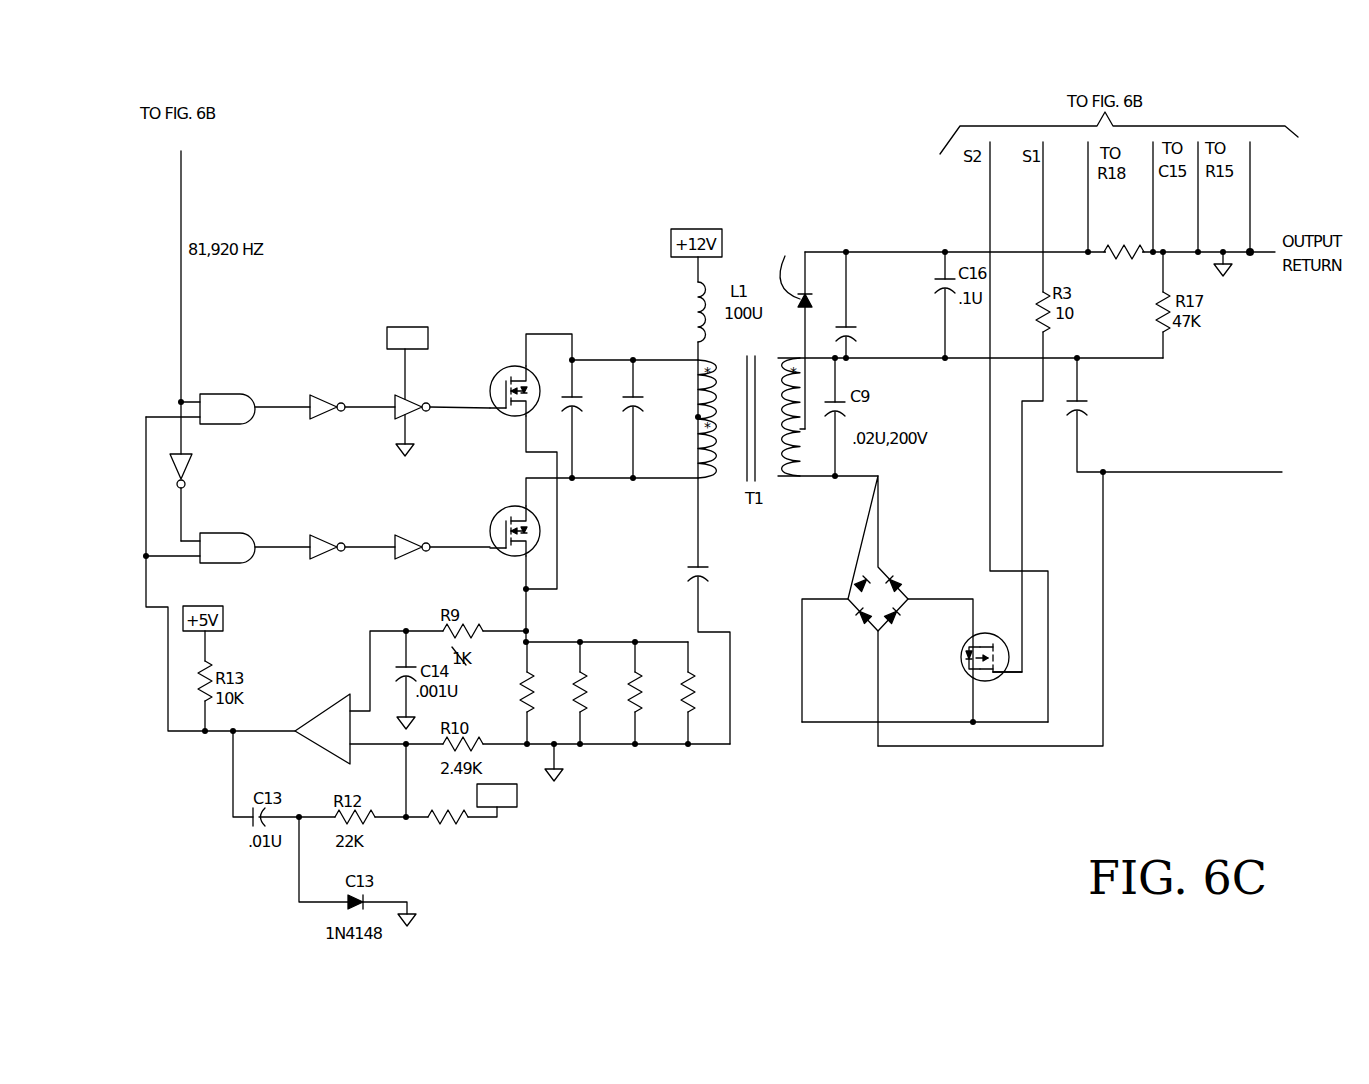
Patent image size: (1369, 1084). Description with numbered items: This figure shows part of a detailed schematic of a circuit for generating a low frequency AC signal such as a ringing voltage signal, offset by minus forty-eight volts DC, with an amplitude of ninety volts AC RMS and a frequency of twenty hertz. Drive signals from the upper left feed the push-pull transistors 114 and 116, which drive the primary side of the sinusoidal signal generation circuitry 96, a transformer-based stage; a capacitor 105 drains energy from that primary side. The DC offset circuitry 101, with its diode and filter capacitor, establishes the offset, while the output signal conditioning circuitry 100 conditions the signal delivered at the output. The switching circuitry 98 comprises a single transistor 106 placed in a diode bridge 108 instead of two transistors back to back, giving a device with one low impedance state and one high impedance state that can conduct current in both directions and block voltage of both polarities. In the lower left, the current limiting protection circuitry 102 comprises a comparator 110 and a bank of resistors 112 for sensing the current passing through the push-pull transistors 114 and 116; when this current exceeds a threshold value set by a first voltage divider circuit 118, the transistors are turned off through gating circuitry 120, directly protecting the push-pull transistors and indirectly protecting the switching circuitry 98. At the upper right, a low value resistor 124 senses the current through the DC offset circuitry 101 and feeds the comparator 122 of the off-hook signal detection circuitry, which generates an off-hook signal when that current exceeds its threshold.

The sinusoidal signal generation circuitry 96 is at (644, 308).
The switching circuitry 98 is at (985, 757).
The output signal conditioning circuitry 100 is at (1170, 405).
The DC offset circuitry 101 is at (893, 230).
The current limiting protection circuitry 102 is at (143, 398).
The capacitor 105 is at (688, 575).
The single transistor 106 is at (1010, 625).
The diode bridge 108 is at (858, 585).
The comparator 110 is at (342, 692).
The bank of resistors 112 is at (637, 765).
The push-pull transistor 114 is at (490, 393).
The push-pull transistor 116 is at (490, 535).
The first voltage divider circuit 118 is at (458, 848).
The gating circuitry 120 is at (148, 625).
The comparator 122 is at (1264, 195).
The low value resistor 124 is at (1112, 258).